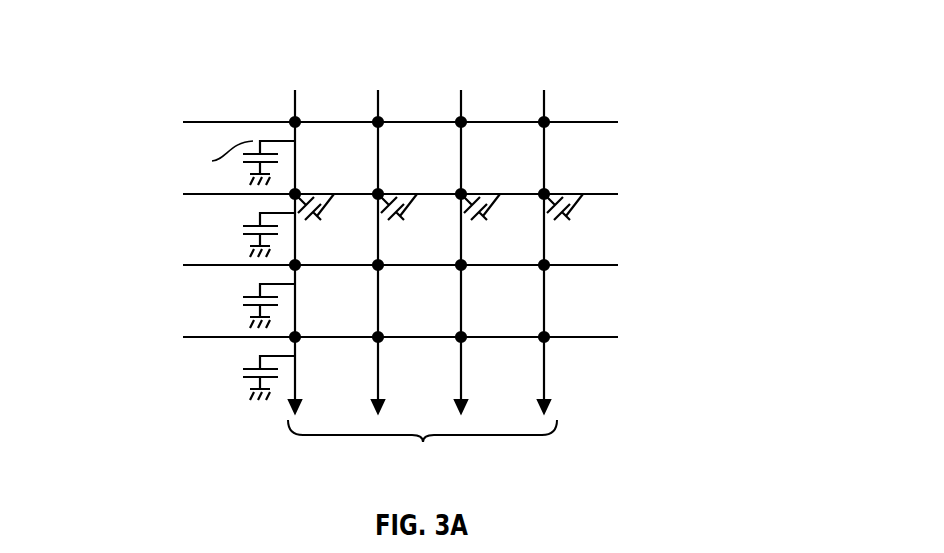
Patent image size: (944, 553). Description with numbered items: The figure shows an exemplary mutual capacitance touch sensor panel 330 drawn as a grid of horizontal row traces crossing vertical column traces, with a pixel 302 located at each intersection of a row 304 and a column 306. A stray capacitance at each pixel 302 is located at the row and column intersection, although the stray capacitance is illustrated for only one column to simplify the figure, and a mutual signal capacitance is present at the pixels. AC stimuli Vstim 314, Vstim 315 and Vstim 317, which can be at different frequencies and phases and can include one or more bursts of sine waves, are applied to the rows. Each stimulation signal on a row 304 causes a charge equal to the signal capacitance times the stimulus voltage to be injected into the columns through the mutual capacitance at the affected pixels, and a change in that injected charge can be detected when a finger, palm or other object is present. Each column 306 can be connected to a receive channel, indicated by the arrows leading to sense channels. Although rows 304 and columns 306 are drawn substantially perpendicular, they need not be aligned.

The touch sensor panel 330 is at (539, 58).
The pixel 302 is at (548, 118).
The row 304 is at (597, 193).
The column 306 is at (545, 303).
The Vstim 314 is at (123, 168).
The Vstim 315 is at (123, 235).
The Vstim 317 is at (123, 302).